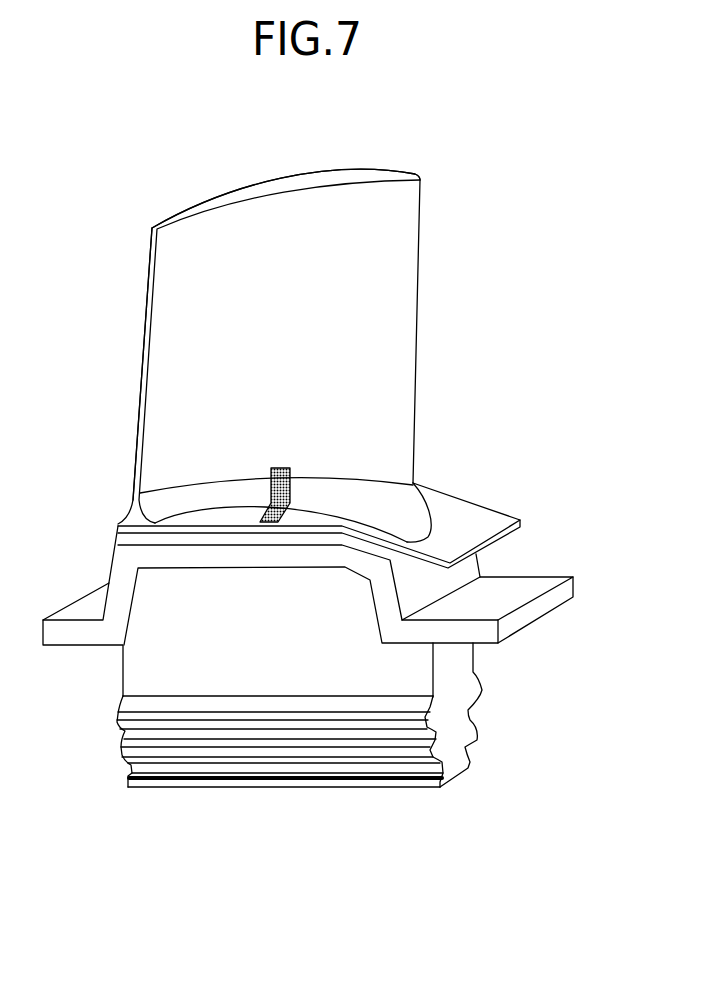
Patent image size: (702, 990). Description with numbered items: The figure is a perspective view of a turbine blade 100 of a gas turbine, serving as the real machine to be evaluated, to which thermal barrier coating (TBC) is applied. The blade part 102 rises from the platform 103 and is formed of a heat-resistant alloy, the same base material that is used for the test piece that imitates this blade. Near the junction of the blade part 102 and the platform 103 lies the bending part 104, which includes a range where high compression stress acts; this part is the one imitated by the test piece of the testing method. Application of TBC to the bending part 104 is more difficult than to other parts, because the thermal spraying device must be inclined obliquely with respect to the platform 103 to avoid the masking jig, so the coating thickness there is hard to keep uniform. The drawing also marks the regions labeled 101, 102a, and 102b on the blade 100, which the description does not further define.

The turbine blade 100 is at (455, 198).
The root 101 is at (510, 587).
The blade part 102 is at (415, 310).
The tip of airfoil 102a is at (285, 177).
The leading edge 102b is at (178, 284).
The platform 103 is at (497, 520).
The bending part 104 is at (282, 468).